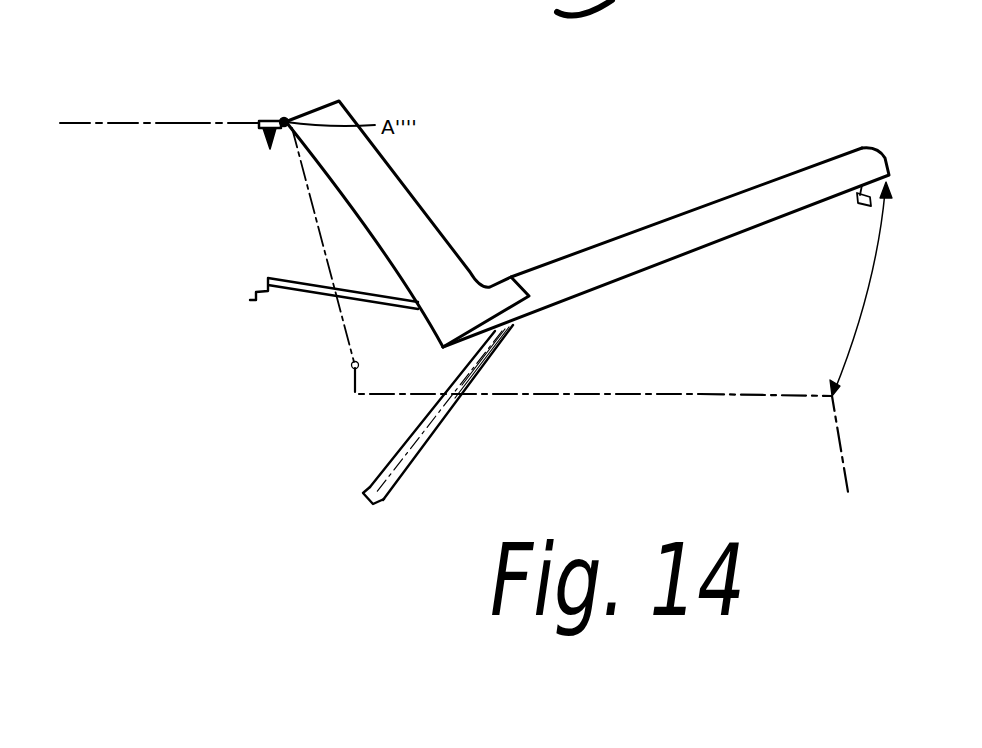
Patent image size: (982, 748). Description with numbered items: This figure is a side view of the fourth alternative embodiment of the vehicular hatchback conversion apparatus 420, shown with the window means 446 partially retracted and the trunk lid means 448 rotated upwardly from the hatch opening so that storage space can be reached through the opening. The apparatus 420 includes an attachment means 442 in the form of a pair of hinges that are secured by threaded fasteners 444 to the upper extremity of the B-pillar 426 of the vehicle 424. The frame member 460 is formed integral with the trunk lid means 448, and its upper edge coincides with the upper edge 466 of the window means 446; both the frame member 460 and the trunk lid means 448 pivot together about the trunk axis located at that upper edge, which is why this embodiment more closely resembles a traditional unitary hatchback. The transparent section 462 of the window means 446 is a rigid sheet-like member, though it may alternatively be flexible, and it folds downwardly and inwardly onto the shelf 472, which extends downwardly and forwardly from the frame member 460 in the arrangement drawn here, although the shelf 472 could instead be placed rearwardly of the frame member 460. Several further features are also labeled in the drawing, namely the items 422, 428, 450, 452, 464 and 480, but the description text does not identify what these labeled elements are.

The vehicular hatchback conversion apparatus 420 is at (537, 252).
The base reference line 422 is at (350, 373).
The vehicle 424 is at (107, 124).
The B-pillar 426 is at (197, 140).
The reference line 428 is at (700, 394).
The attachment means 442 is at (262, 118).
The threaded fasteners 444 is at (265, 135).
The window means 446 is at (292, 291).
The trunk lid means 448 is at (643, 238).
The seat top surface 450 is at (777, 185).
The pivot point 452 is at (286, 122).
The frame member 460 is at (352, 208).
The transparent section 462 is at (322, 295).
The backrest 464 is at (408, 200).
The upper edge 466 is at (287, 120).
The shelf 472 is at (435, 428).
The latch 480 is at (863, 208).